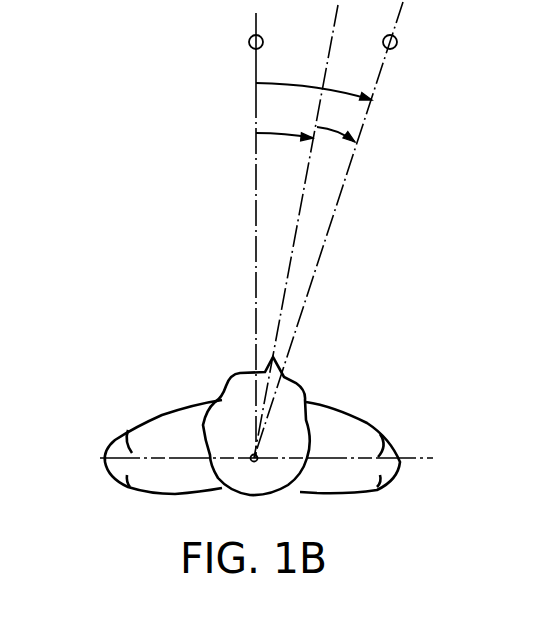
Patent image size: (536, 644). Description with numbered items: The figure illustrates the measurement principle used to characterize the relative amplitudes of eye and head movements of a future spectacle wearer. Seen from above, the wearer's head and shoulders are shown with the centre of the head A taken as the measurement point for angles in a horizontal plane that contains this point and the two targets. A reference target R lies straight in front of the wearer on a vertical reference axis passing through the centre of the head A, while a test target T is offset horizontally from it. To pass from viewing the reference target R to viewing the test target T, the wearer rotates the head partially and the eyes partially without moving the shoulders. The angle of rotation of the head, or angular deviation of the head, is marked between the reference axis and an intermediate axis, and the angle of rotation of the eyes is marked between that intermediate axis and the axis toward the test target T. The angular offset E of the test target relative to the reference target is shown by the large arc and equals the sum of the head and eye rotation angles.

The reference target R is at (249, 42).
The test target T is at (395, 38).
The angular offset E is at (324, 98).
The centre of the head A is at (251, 456).